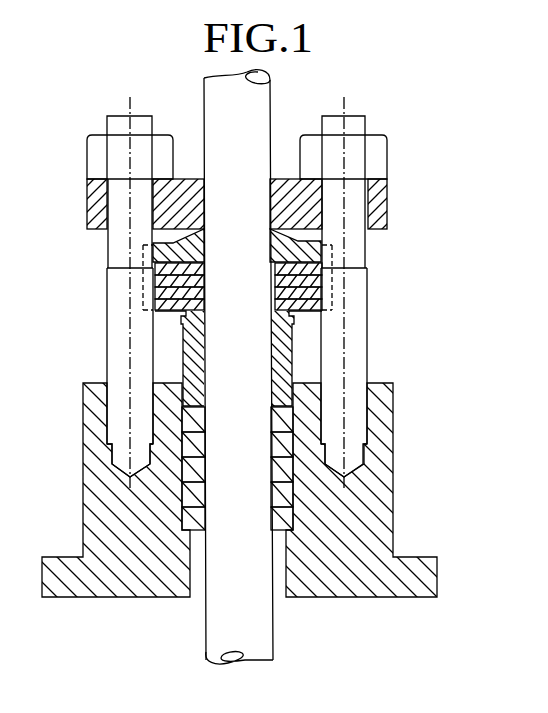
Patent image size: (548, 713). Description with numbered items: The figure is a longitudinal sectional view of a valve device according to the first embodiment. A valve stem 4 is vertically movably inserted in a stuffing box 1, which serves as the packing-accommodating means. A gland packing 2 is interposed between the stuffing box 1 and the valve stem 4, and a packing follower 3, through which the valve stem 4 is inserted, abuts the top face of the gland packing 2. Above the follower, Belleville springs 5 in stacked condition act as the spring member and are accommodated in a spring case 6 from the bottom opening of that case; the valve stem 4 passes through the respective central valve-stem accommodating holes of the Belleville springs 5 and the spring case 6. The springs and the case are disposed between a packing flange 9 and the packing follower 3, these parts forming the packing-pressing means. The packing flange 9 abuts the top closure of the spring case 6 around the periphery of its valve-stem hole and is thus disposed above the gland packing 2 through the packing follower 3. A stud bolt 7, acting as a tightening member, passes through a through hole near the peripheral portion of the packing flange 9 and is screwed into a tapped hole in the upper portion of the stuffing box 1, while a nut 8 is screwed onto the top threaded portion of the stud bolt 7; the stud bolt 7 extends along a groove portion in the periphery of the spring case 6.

The stuffing box 1 is at (393, 458).
The gland packing 2 is at (290, 515).
The packing follower 3 is at (287, 363).
The valve stem 4 is at (262, 103).
The Belleville springs 5 is at (160, 312).
The spring case 6 is at (308, 251).
The stud bolt 7 is at (360, 330).
The nut 8 is at (380, 155).
The packing flange 9 is at (384, 205).